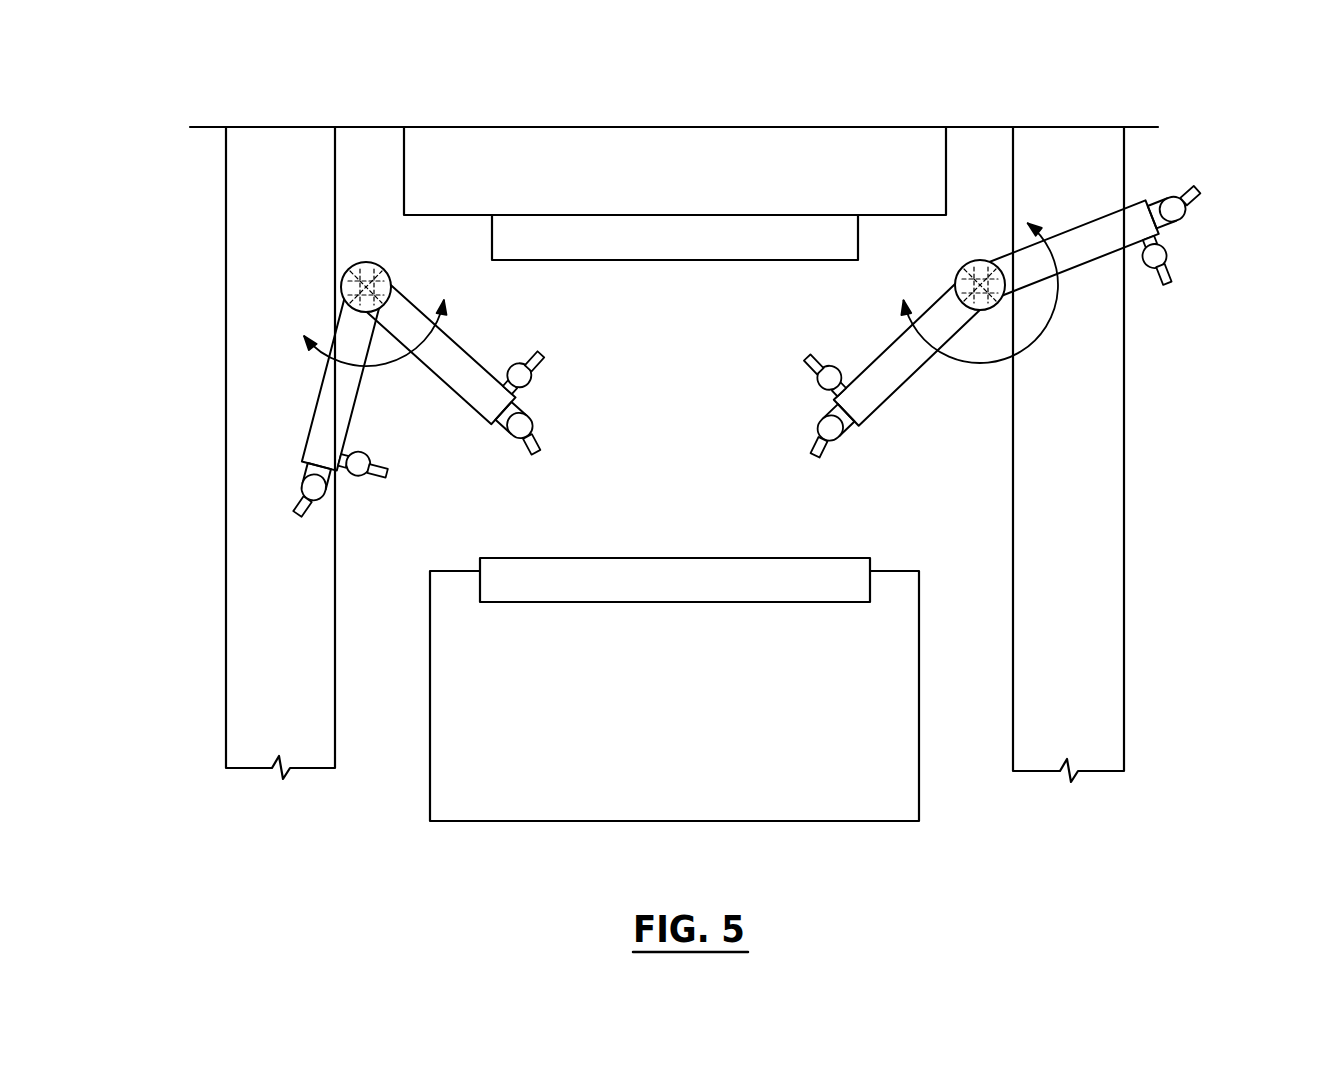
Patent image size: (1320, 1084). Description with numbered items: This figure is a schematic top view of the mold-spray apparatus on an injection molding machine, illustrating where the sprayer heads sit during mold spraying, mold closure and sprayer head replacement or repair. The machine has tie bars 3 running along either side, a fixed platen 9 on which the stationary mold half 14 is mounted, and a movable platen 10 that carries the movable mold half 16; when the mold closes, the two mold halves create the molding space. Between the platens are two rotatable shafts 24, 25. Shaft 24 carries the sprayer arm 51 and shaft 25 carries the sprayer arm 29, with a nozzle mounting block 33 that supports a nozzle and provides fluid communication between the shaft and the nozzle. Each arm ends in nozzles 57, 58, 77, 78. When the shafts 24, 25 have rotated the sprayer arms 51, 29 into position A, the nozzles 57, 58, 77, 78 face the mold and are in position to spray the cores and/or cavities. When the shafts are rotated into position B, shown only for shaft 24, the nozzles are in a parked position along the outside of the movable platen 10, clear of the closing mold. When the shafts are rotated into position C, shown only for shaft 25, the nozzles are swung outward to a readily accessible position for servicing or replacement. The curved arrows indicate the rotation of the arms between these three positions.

The tie bars 3 is at (252, 254).
The fixed platen 9 is at (428, 148).
The stationary mold half 14 is at (840, 238).
The movable platen 10 is at (905, 667).
The movable mold half 16 is at (848, 585).
The shaft 24 is at (357, 263).
The shaft 25 is at (965, 265).
The sprayer arm 51 is at (347, 395).
The nozzle mounting block 33 is at (497, 440).
The sprayer arm 29 is at (1080, 260).
The nozzle 57 is at (350, 462).
The nozzle 58 is at (320, 480).
The nozzle 77 is at (828, 383).
The nozzle 78 is at (827, 420).
The position A is at (467, 377).
The position B is at (313, 447).
The position C is at (1095, 248).